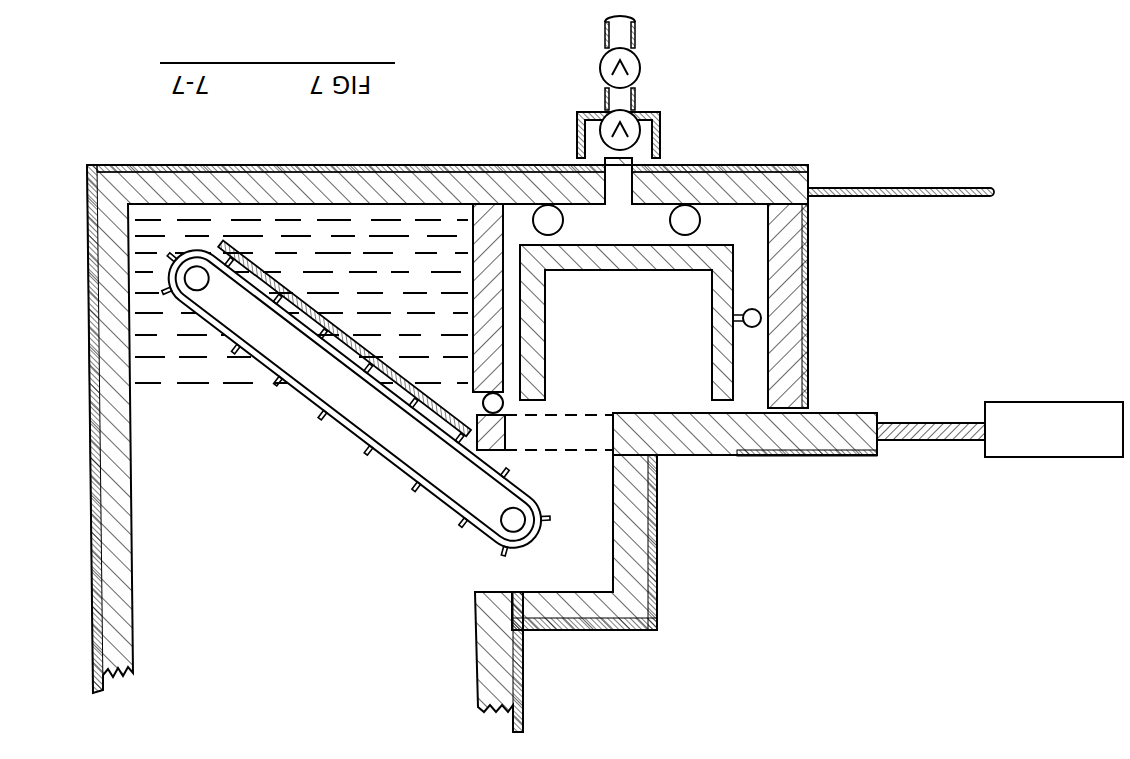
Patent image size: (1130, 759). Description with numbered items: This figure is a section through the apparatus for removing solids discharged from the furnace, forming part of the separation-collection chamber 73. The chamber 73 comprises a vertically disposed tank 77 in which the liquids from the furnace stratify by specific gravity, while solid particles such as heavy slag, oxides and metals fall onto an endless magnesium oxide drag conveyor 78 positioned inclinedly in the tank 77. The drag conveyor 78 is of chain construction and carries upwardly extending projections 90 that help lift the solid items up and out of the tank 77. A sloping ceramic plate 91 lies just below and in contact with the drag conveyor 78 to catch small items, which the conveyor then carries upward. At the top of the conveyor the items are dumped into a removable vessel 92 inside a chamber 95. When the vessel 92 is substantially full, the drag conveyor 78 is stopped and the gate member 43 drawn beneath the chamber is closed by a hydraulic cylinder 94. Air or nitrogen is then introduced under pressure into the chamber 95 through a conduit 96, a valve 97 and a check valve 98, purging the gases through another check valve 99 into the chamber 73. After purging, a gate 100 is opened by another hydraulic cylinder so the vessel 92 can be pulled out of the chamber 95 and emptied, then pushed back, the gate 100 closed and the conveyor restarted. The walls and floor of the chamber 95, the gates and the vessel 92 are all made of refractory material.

The gate bar 43 is at (683, 455).
The separation-collection chamber 73 is at (292, 672).
The tank 77 is at (157, 520).
The drag conveyor 78 is at (338, 428).
The upwardly extending projections 90 is at (413, 488).
The sloping ceramic plate 91 is at (343, 343).
The removable vessel 92 is at (703, 245).
The hydraulic cylinder 94 is at (1010, 457).
The chamber 95 is at (647, 329).
The conduit 96 is at (605, 36).
The valve 97 is at (600, 68).
The check valve 98 is at (658, 122).
The check valve 99 is at (480, 398).
The gate 100 is at (788, 265).